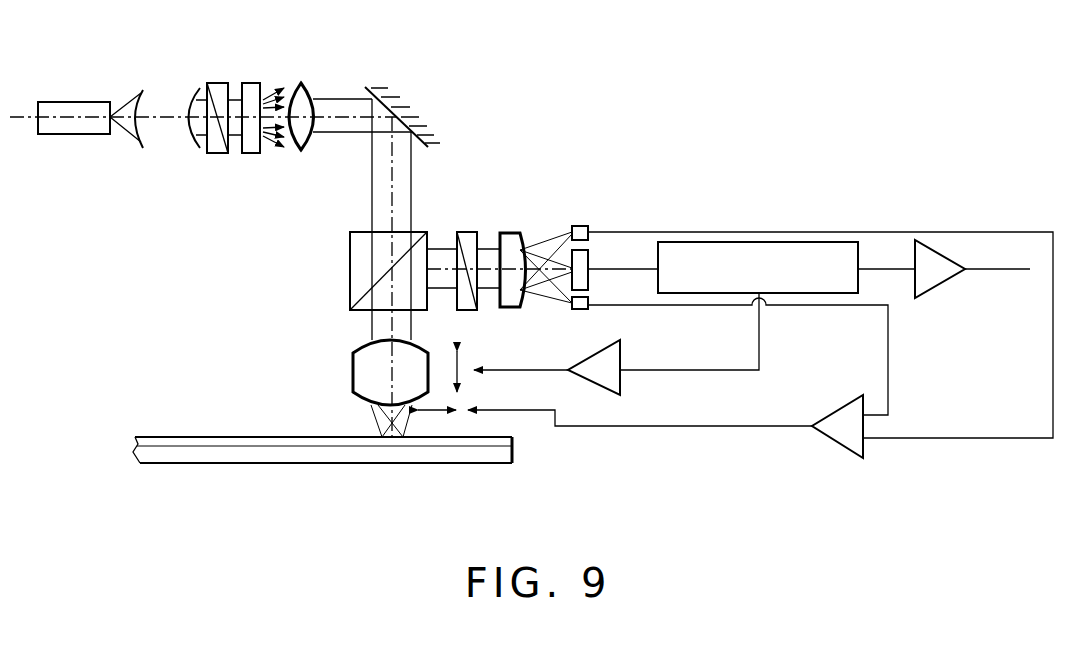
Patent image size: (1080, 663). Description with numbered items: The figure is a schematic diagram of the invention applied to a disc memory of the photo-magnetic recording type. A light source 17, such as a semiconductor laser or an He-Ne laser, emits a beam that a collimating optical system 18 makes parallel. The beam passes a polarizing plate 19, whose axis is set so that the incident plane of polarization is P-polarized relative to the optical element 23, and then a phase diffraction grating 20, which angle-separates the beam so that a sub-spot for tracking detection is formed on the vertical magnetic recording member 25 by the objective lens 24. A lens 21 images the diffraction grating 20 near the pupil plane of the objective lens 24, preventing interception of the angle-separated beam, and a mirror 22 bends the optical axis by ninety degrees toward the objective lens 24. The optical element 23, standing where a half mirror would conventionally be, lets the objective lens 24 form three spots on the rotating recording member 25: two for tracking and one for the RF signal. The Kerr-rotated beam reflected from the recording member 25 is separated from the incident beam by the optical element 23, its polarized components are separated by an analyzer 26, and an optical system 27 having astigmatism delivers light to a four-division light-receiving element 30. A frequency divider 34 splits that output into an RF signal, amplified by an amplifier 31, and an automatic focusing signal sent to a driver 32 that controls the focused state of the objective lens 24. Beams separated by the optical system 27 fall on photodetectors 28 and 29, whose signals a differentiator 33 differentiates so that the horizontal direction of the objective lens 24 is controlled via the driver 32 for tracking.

The light source 17 is at (79, 98).
The collimating optical system 18 is at (195, 90).
The polarizing plate 19 is at (219, 82).
The phase diffraction grating 20 is at (250, 82).
The lens 21 is at (310, 92).
The mirror 22 is at (402, 108).
The optical element 23 is at (350, 272).
The objective lens 24 is at (353, 377).
The vertical magnetic recording member 25 is at (513, 448).
The analyzer 26 is at (470, 232).
The optical system having astigmatism 27 is at (510, 232).
The photodetector 28 is at (580, 226).
The photodetector 29 is at (583, 309).
The four-division light-receiving element 30 is at (588, 257).
The amplifier 31 is at (937, 250).
The driver 32 is at (622, 355).
The differentiator 33 is at (835, 443).
The frequency divider 34 is at (757, 243).